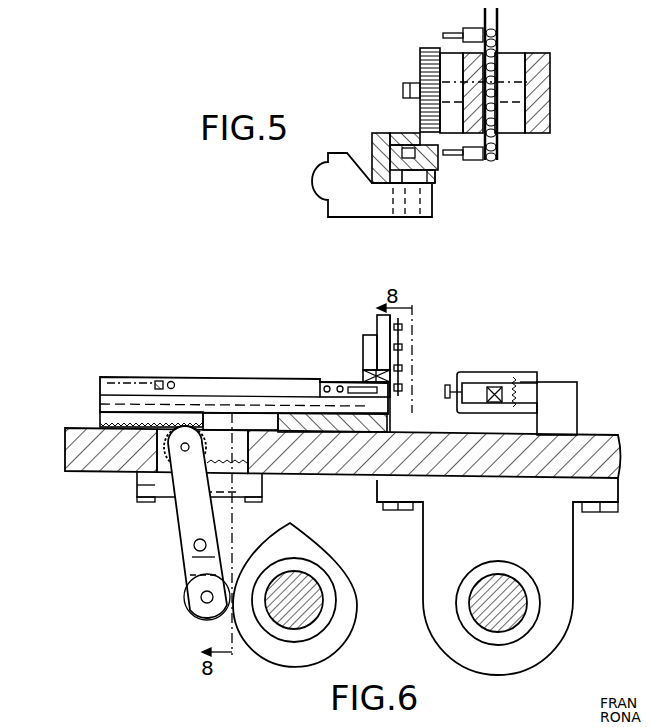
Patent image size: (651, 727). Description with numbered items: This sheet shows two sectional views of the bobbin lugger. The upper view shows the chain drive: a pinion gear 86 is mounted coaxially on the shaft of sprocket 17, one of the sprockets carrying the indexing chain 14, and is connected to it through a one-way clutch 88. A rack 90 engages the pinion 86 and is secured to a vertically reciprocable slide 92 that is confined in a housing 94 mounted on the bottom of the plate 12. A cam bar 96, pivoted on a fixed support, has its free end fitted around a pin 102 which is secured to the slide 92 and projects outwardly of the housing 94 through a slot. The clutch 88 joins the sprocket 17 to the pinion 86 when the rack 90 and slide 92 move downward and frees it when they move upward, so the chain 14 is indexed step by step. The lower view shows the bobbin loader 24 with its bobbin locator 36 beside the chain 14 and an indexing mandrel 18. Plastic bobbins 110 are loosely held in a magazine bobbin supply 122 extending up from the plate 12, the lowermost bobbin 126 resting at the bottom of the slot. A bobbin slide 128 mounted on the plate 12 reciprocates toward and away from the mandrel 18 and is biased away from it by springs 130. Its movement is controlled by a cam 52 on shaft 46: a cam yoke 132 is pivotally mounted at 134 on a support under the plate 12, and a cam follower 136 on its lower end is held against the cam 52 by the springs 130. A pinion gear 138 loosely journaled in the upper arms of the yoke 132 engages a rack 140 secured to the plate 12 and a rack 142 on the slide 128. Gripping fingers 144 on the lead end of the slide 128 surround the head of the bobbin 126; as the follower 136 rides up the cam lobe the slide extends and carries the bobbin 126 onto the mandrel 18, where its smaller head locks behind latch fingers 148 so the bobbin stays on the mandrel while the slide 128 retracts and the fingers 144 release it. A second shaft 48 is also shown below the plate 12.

In FIG. 6, the plate 12 is at (603, 443).
In FIG. 6, the indexing chain 14 is at (530, 380).
In FIG. 5, the sprocket 17 is at (512, 60).
In FIG. 6, the bobbin indexing mandrel 18 is at (462, 393).
In FIG. 6, the bobbin loader 24 is at (271, 304).
In FIG. 6, the bobbin locator 36 is at (521, 322).
In FIG. 6, the shaft 46 is at (310, 578).
In FIG. 6, the idler shaft 48 is at (502, 580).
In FIG. 6, the cam 52 is at (318, 548).
In FIG. 5, the pinion gear 86 is at (428, 48).
In FIG. 5, the one-way clutch 88 is at (452, 60).
In FIG. 5, the rack 90 is at (435, 143).
In FIG. 5, the slide 92 is at (403, 133).
In FIG. 5, the housing 94 is at (370, 155).
In FIG. 5, the cam bar 96 is at (360, 203).
In FIG. 5, the pin 102 is at (427, 217).
In FIG. 6, the bobbin 110 is at (402, 347).
In FIG. 6, the magazine bobbin supply 122 is at (380, 323).
In FIG. 6, the lowermost bobbin 126 is at (402, 387).
In FIG. 6, the bobbin slide 128 is at (243, 380).
In FIG. 6, the springs 130 is at (160, 380).
In FIG. 6, the cam yoke 132 is at (183, 513).
In FIG. 6, the pivot 134 is at (193, 548).
In FIG. 6, the cam follower 136 is at (195, 620).
In FIG. 6, the pinion gear 138 is at (130, 472).
In FIG. 6, the rack 140 is at (220, 472).
In FIG. 6, the rack 142 is at (100, 410).
In FIG. 6, the gripping fingers 144 is at (368, 380).
In FIG. 6, the latch fingers 148 is at (502, 377).